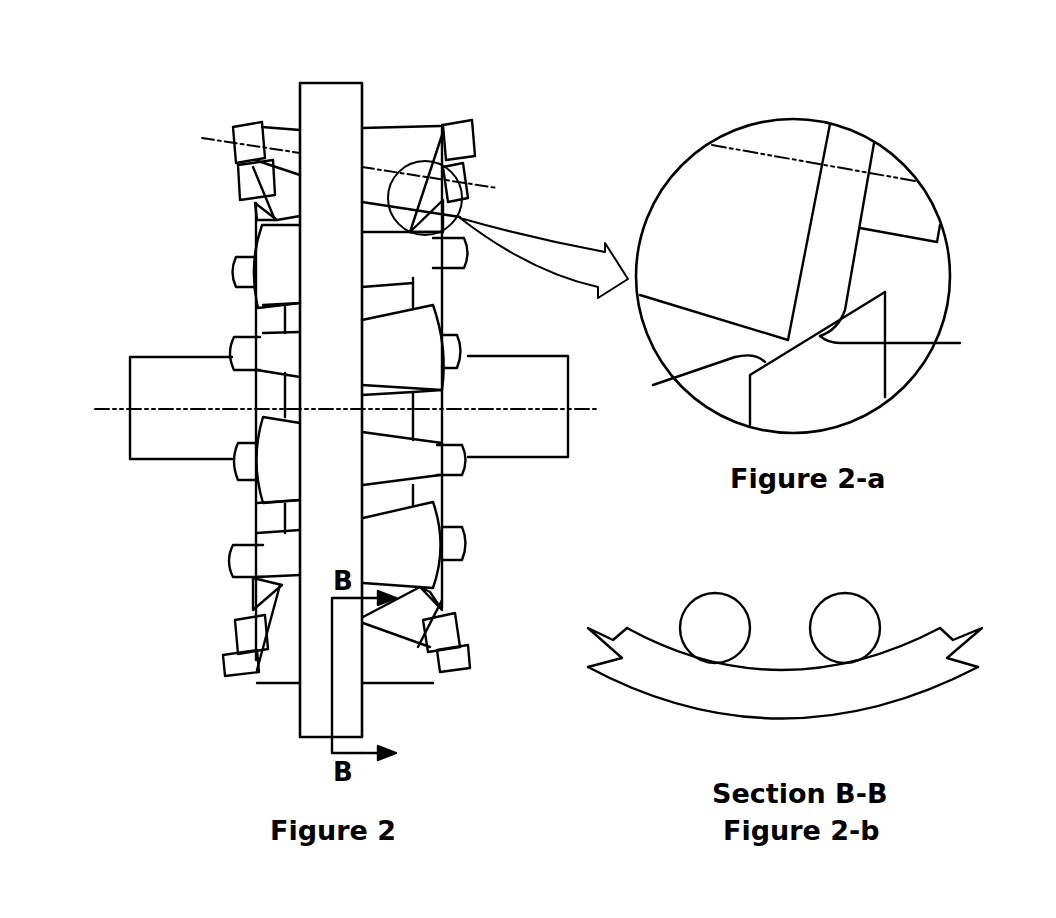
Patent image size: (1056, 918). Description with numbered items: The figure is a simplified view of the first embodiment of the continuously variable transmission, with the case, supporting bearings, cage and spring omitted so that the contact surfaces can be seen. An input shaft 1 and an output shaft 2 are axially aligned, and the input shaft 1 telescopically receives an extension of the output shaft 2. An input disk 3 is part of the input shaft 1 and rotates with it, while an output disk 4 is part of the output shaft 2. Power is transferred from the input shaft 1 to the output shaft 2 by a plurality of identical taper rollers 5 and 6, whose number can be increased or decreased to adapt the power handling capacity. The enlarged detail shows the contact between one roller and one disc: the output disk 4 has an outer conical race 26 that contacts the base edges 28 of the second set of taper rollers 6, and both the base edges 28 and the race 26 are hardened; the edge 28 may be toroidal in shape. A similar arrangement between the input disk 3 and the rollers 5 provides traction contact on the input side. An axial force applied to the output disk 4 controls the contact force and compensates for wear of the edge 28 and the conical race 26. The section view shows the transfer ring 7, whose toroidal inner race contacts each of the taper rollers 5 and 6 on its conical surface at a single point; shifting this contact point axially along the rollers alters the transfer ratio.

In FIG. 2, the input shaft 1 is at (155, 432).
In FIG. 2, the output shaft 2 is at (538, 442).
In FIG. 2, the input disk 3 is at (265, 520).
In FIG. 2, the output disk 4 is at (432, 292).
In FIG. 2A, the output disk 4 is at (778, 392).
In FIG. 2, the taper rollers 5 is at (272, 452).
In FIG. 2B, the taper rollers 5 is at (852, 618).
In FIG. 2, the taper rollers 6 is at (418, 537).
In FIG. 2A, the taper rollers 6 is at (700, 288).
In FIG. 2B, the taper rollers 6 is at (703, 618).
In FIG. 2, the transfer ring 7 is at (320, 113).
In FIG. 2B, the transfer ring 7 is at (752, 703).
In FIG. 2A, the conical race 26 is at (668, 380).
In FIG. 2A, the base edges 28 is at (960, 343).